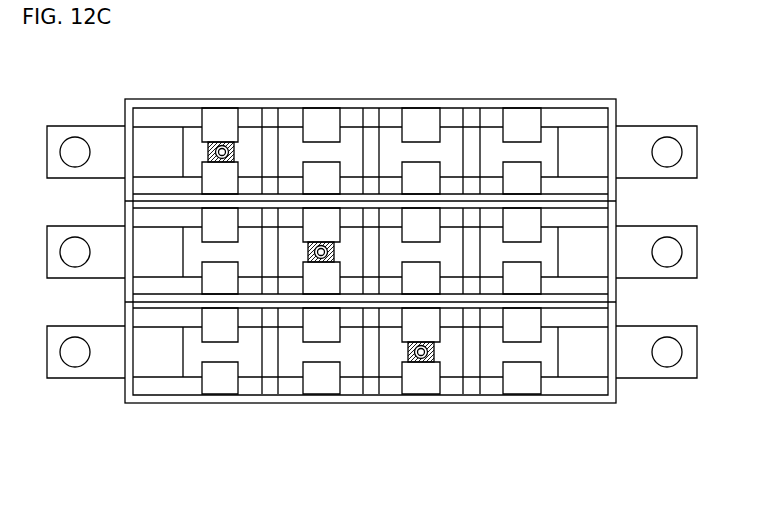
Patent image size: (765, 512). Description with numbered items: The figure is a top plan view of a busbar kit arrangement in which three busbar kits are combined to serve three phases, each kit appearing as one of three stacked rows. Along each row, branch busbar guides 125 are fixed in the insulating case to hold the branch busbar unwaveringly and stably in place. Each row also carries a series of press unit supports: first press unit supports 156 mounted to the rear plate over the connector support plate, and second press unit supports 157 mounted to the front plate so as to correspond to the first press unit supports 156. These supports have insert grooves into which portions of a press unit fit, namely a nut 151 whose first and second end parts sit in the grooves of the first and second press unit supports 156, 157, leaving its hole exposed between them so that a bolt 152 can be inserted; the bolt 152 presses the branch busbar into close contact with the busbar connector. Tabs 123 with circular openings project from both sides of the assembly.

The fastening tab 123 is at (643, 137).
The branch busbar guide 125 is at (473, 122).
The nut 151 is at (222, 146).
The bolt 152 is at (228, 140).
The first press unit support 156 is at (322, 120).
The second press unit support 157 is at (310, 175).